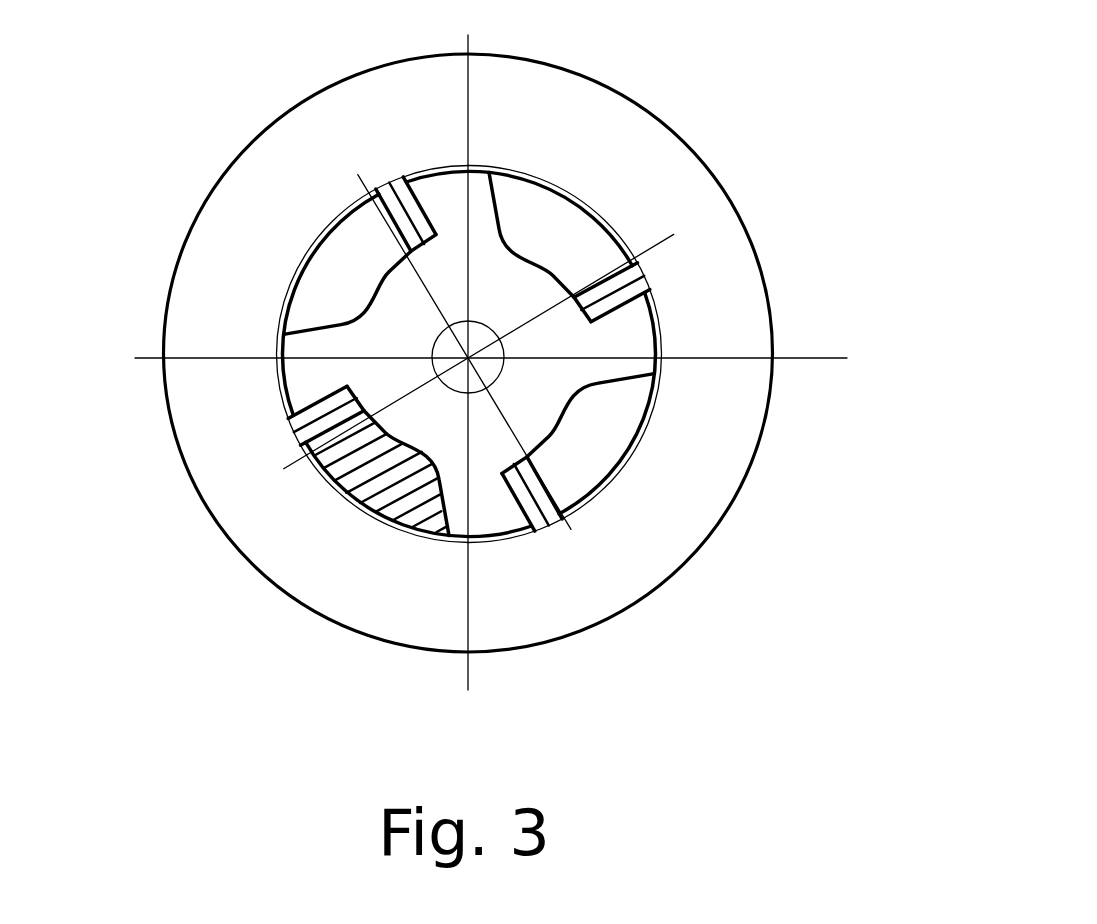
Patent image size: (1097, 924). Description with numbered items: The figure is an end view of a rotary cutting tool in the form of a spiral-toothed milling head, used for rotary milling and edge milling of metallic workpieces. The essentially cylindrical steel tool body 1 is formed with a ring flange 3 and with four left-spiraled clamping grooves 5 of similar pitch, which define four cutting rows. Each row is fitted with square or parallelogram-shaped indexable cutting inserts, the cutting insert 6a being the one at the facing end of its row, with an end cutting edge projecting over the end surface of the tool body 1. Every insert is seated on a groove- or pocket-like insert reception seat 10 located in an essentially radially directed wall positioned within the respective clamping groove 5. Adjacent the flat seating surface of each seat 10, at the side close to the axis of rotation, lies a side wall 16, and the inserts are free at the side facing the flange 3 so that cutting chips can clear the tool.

The tool body 1 is at (653, 413).
The flange 3 is at (653, 155).
The clamping groove 5 is at (360, 307).
The cutting insert 6a is at (328, 425).
The insert reception seat 10 is at (630, 305).
The side wall 16 is at (573, 303).